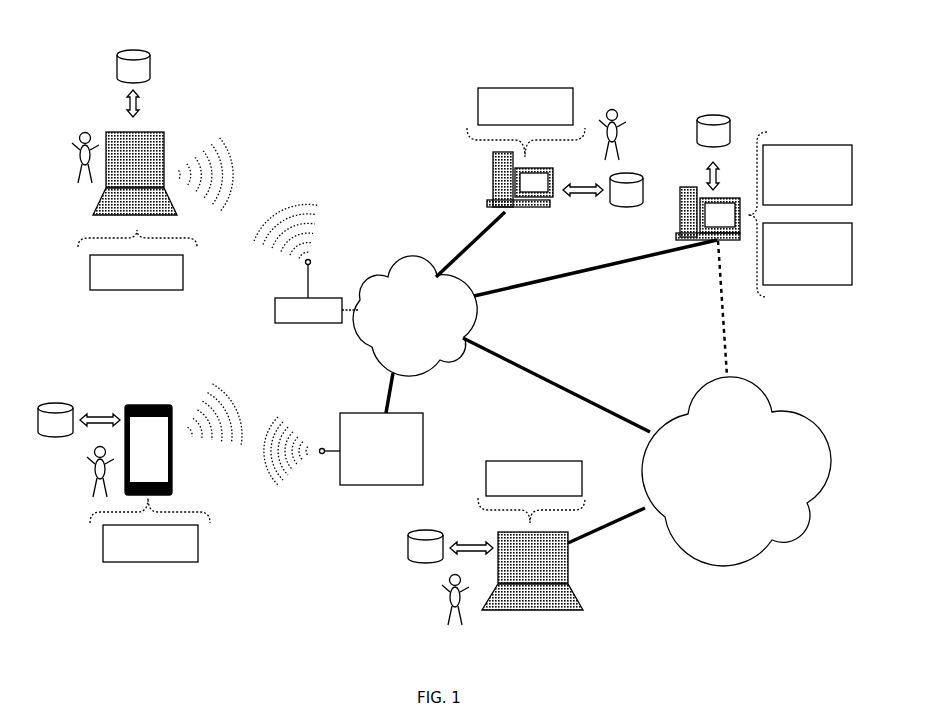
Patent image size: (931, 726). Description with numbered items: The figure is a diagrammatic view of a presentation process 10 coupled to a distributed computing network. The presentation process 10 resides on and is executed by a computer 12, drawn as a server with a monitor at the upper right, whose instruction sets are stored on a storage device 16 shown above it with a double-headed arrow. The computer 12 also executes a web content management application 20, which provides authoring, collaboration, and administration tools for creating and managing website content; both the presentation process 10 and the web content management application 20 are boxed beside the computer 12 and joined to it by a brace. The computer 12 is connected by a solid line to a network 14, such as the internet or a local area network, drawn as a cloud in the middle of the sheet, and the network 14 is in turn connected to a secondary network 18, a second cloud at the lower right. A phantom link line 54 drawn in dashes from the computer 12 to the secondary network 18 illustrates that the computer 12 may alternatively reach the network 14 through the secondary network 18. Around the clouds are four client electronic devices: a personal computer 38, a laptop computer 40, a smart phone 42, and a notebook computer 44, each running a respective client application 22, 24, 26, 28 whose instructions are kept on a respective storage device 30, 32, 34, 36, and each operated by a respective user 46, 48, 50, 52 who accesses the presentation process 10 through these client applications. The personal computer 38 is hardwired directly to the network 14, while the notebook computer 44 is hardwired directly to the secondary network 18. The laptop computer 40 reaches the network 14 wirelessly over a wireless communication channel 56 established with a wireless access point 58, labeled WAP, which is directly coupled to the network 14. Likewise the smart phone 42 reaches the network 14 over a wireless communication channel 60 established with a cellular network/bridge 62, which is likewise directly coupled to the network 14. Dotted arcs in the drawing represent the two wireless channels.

The presentation process 10 is at (852, 170).
The computer 12 is at (682, 198).
The network 14 is at (415, 316).
The storage device 16 is at (713, 131).
The secondary network 18 is at (736, 471).
The web content management application 20 is at (852, 248).
The client application 22 is at (573, 110).
The client application 24 is at (183, 278).
The client application 26 is at (198, 540).
The client application 28 is at (582, 478).
The storage device 30 is at (626, 190).
The storage device 32 is at (133, 66).
The storage device 34 is at (55, 420).
The storage device 36 is at (425, 546).
The client electronic device 38 is at (491, 173).
The client electronic device 40 is at (165, 136).
The client electronic device 42 is at (176, 440).
The client electronic device 44 is at (570, 565).
The user 46 is at (626, 124).
The user 48 is at (62, 153).
The user 50 is at (85, 457).
The user 52 is at (431, 594).
The phantom link line 54 is at (704, 289).
The wireless communication channel 56 is at (266, 183).
The wireless access point 58 is at (275, 310).
The wireless communication channel 60 is at (258, 411).
The cellular network/bridge 62 is at (423, 425).